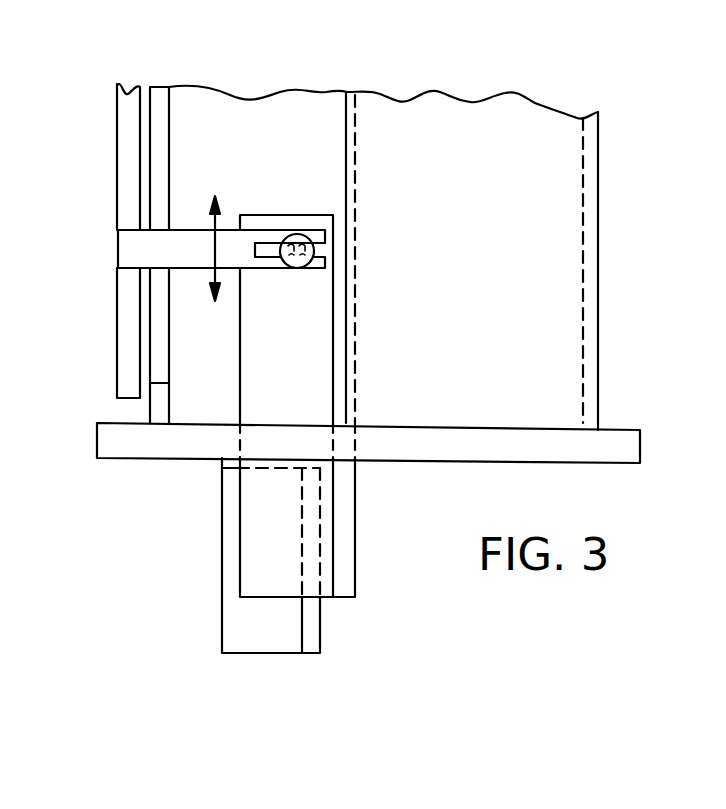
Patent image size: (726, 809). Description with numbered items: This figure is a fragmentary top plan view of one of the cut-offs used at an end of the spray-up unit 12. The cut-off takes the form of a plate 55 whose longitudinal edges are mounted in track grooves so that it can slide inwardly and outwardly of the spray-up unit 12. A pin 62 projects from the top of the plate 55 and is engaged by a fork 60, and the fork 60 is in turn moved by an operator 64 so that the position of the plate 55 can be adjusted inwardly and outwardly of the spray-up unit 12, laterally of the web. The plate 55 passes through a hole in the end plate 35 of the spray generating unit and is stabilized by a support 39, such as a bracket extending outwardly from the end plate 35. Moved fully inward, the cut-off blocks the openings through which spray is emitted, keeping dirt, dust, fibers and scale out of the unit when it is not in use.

The spray-up unit 12 is at (482, 91).
The operator 64 is at (127, 155).
The fork 60 is at (130, 250).
The pin 62 is at (297, 234).
The plate 55 is at (342, 508).
The support 39 is at (235, 583).
The end plate 35 is at (132, 448).